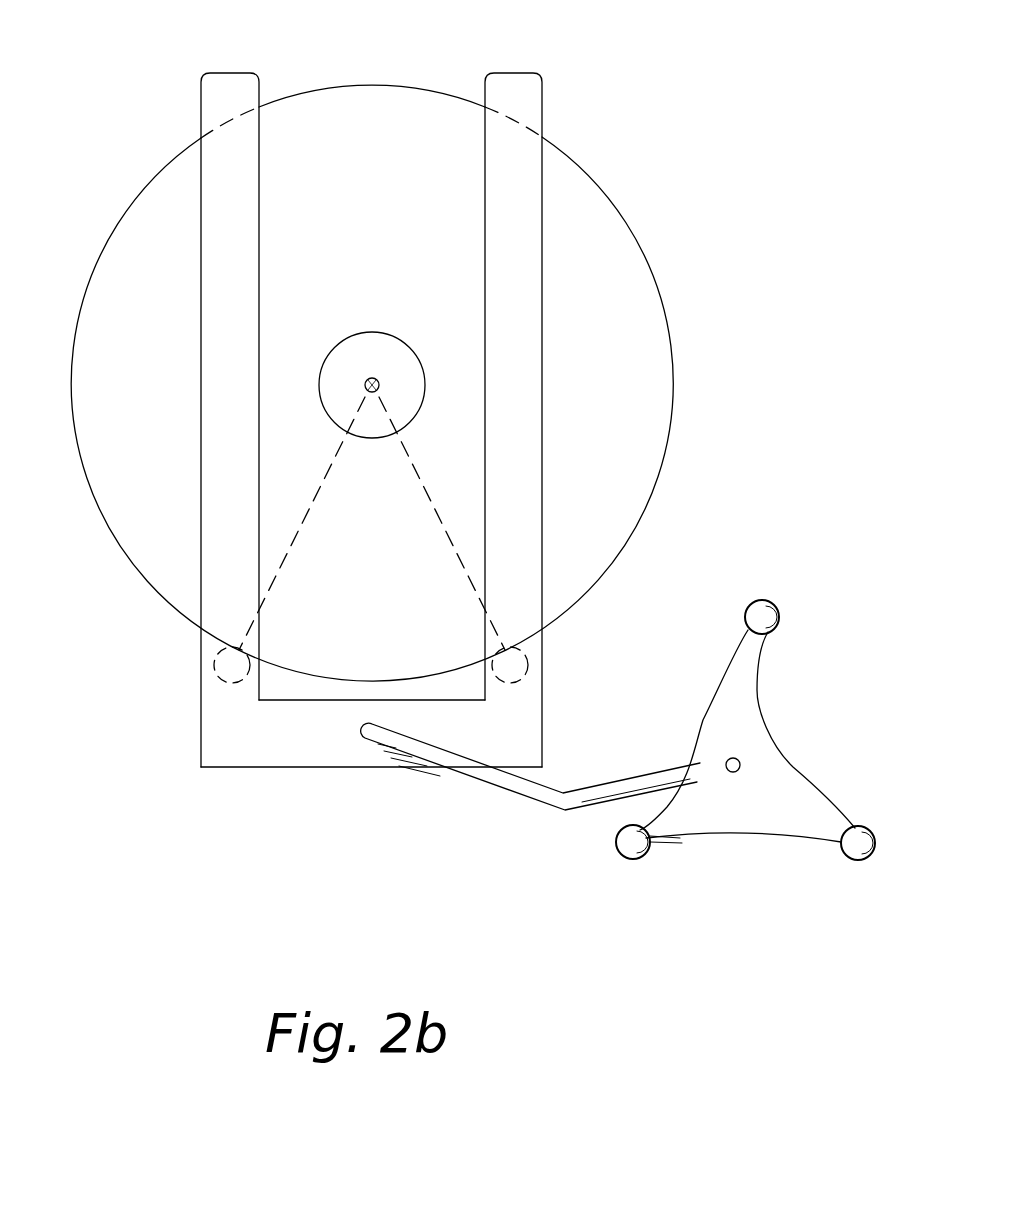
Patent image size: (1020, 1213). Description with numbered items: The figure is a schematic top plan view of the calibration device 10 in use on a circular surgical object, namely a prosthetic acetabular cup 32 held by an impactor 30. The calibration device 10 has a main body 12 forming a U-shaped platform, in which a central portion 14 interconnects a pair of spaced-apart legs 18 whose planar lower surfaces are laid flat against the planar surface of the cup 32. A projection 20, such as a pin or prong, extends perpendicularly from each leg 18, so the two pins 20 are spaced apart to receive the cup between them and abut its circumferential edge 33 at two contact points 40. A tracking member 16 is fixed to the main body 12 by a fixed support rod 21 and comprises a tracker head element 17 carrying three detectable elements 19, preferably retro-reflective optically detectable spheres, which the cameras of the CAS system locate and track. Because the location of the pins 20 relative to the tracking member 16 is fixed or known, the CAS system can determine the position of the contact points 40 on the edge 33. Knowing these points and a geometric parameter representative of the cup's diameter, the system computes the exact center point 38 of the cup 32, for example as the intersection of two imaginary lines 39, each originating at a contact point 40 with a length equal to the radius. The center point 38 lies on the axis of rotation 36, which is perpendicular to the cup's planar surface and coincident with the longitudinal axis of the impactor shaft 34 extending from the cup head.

The calibration device 10 is at (218, 812).
The main body 12 is at (201, 737).
The central portion 14 is at (292, 745).
The tracking member 16 is at (798, 742).
The tracker head element 17 is at (752, 807).
The legs 18 is at (235, 228).
The detectable elements 19 is at (762, 600).
The projections 20 is at (214, 665).
The fixed support rod 21 is at (515, 800).
The impactor 30 is at (136, 148).
The circular object 32 is at (662, 282).
The circumferential edge 33 is at (673, 418).
The impactor shaft 34 is at (363, 440).
The axis of rotation 36 is at (372, 342).
The center point 38 is at (380, 378).
The imaginary lines 39 is at (313, 503).
The contact points 40 is at (239, 648).